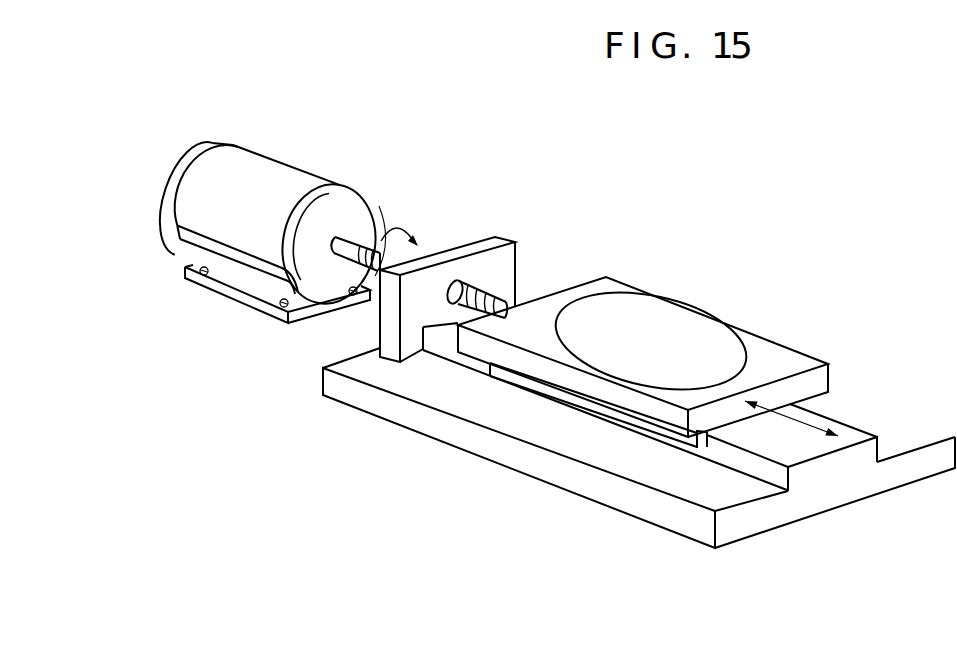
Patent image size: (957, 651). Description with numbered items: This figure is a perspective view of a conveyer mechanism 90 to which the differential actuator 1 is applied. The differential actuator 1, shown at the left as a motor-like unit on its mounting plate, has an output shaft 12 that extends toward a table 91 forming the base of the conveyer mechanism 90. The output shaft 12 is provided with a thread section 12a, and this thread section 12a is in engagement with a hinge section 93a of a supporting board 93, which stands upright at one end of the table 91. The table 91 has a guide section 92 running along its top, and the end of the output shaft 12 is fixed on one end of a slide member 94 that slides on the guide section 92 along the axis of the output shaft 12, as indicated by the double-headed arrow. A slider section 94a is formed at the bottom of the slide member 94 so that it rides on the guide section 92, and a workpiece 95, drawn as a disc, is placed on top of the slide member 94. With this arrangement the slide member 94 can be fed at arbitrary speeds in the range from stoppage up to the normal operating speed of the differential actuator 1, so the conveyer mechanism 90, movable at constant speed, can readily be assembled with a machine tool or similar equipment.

The differential actuator 1 is at (268, 170).
The output shaft 12 is at (352, 246).
The thread section 12a is at (514, 305).
The supporting board 93 is at (484, 243).
The hinge section 93a is at (462, 281).
The conveyer mechanism 90 is at (762, 297).
The table 91 is at (765, 524).
The guide section 92 is at (852, 433).
The slide member 94 is at (783, 357).
The slider section 94a is at (660, 428).
The workpiece 95 is at (675, 308).